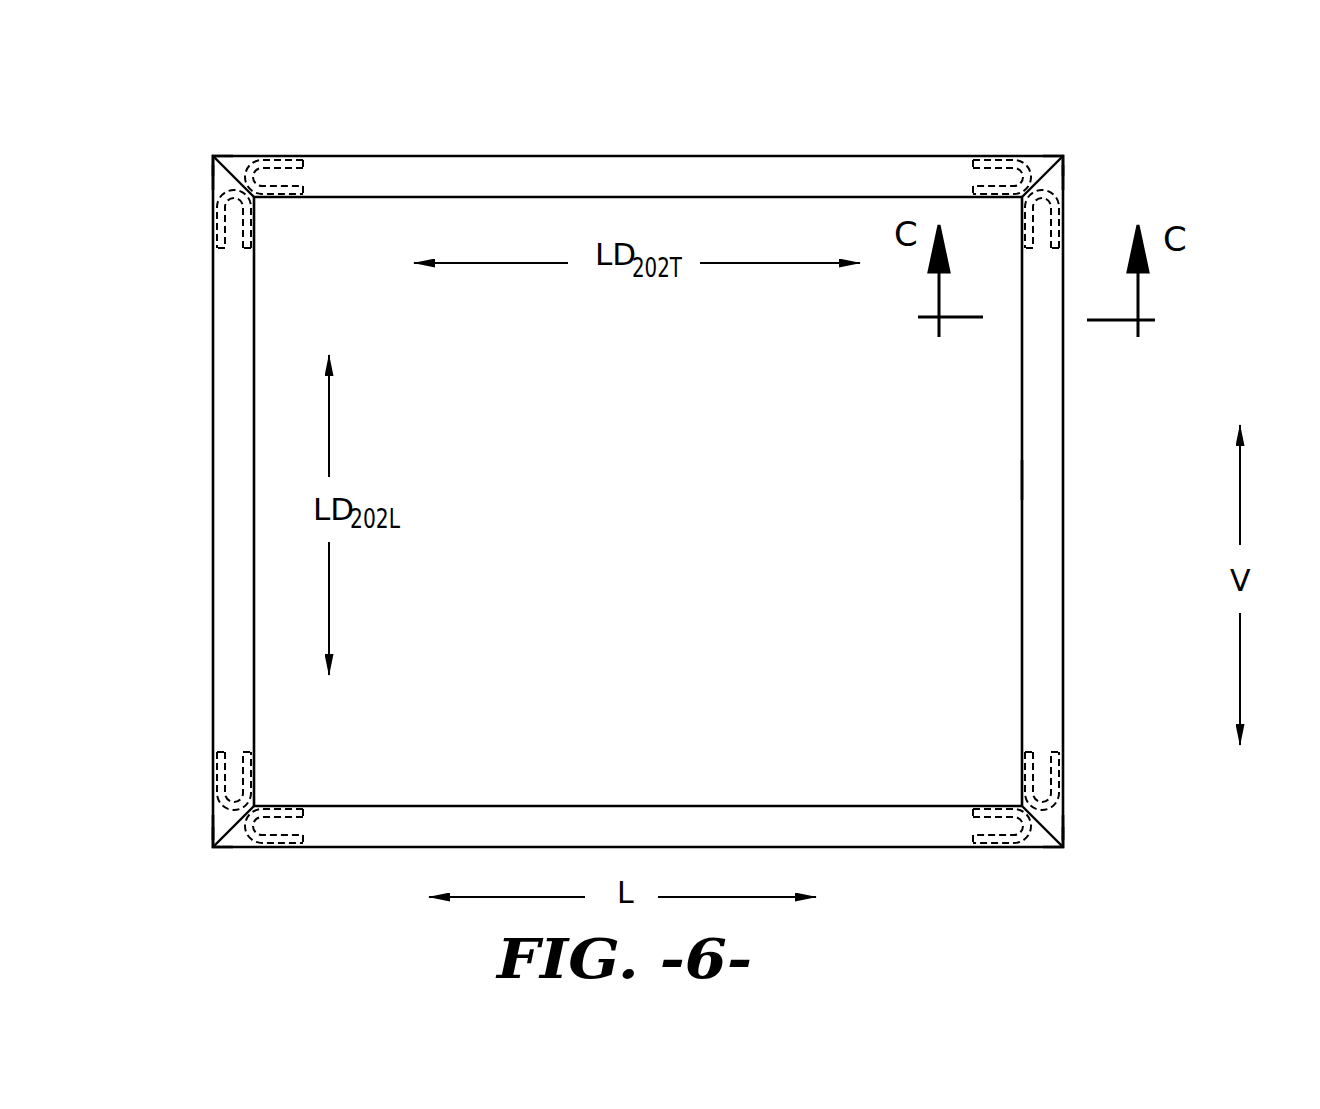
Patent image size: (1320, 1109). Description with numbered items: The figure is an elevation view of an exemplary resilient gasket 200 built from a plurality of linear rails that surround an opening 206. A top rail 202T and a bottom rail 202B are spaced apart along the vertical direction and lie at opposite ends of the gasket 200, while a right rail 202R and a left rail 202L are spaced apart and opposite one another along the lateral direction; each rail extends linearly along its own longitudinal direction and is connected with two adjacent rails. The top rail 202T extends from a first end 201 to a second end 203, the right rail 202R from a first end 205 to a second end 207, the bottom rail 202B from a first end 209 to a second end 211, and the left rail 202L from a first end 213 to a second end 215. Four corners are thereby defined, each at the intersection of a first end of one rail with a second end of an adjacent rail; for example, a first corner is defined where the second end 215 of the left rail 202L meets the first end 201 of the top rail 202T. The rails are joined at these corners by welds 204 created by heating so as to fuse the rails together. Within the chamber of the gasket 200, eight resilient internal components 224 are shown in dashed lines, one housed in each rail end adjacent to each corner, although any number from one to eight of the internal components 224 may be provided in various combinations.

The gasket 200 is at (1202, 160).
The first end of top rail 201 is at (232, 140).
The second end of top rail 203 is at (1060, 143).
The second end of bottom rail 211 is at (229, 859).
The first end of bottom rail 209 is at (1043, 859).
The weld 204 is at (210, 153).
The second end of left rail 215 is at (200, 174).
The first end of right rail 205 is at (1078, 178).
The first end of left rail 213 is at (200, 830).
The second end of right rail 207 is at (1076, 830).
The opening 206 is at (980, 478).
The top rail 202T is at (437, 175).
The left rail 202L is at (228, 572).
The right rail 202R is at (1042, 690).
The bottom rail 202B is at (870, 822).
The internal component 224 is at (281, 158).